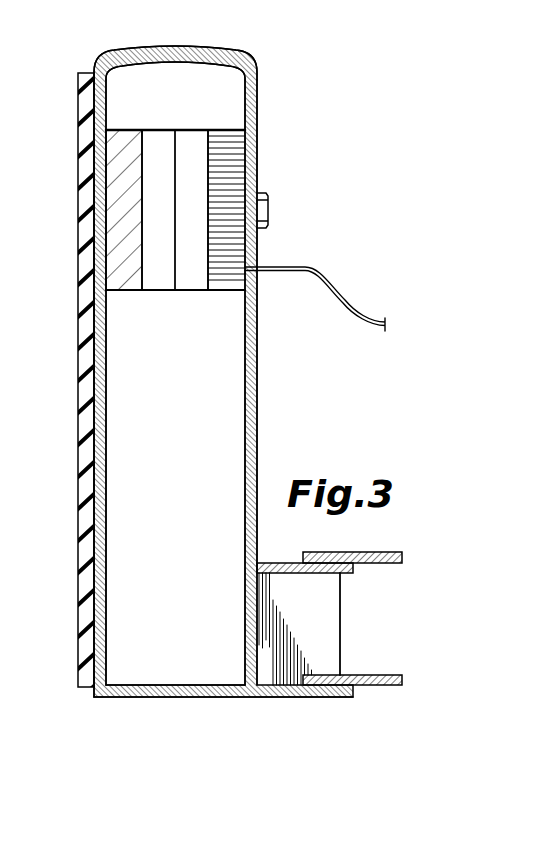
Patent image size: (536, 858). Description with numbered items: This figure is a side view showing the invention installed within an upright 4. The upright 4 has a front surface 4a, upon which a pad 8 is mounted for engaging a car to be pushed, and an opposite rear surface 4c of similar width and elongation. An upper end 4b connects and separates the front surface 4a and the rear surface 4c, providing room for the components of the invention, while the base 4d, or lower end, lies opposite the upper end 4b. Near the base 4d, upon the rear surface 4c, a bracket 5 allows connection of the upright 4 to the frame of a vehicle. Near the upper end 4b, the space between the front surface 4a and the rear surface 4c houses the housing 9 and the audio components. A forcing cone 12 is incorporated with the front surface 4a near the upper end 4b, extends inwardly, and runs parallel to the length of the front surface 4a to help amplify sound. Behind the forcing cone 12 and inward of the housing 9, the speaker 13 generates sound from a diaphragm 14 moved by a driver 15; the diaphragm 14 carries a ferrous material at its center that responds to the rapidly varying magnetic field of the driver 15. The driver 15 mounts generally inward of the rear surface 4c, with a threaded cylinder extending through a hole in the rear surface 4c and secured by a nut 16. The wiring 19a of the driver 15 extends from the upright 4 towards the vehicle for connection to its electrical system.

The upright 4 is at (264, 72).
The front surface 4a is at (94, 343).
The upper end 4b is at (175, 50).
The rear surface 4c is at (257, 443).
The base 4d is at (142, 697).
The bracket 5 is at (335, 630).
The pad 8 is at (80, 502).
The housing 9 is at (158, 282).
The forcing cone 12 is at (117, 172).
The speaker 13 is at (208, 127).
The diaphragm 14 is at (192, 282).
The driver 15 is at (233, 173).
The nut 16 is at (266, 213).
The wiring 19a is at (312, 273).